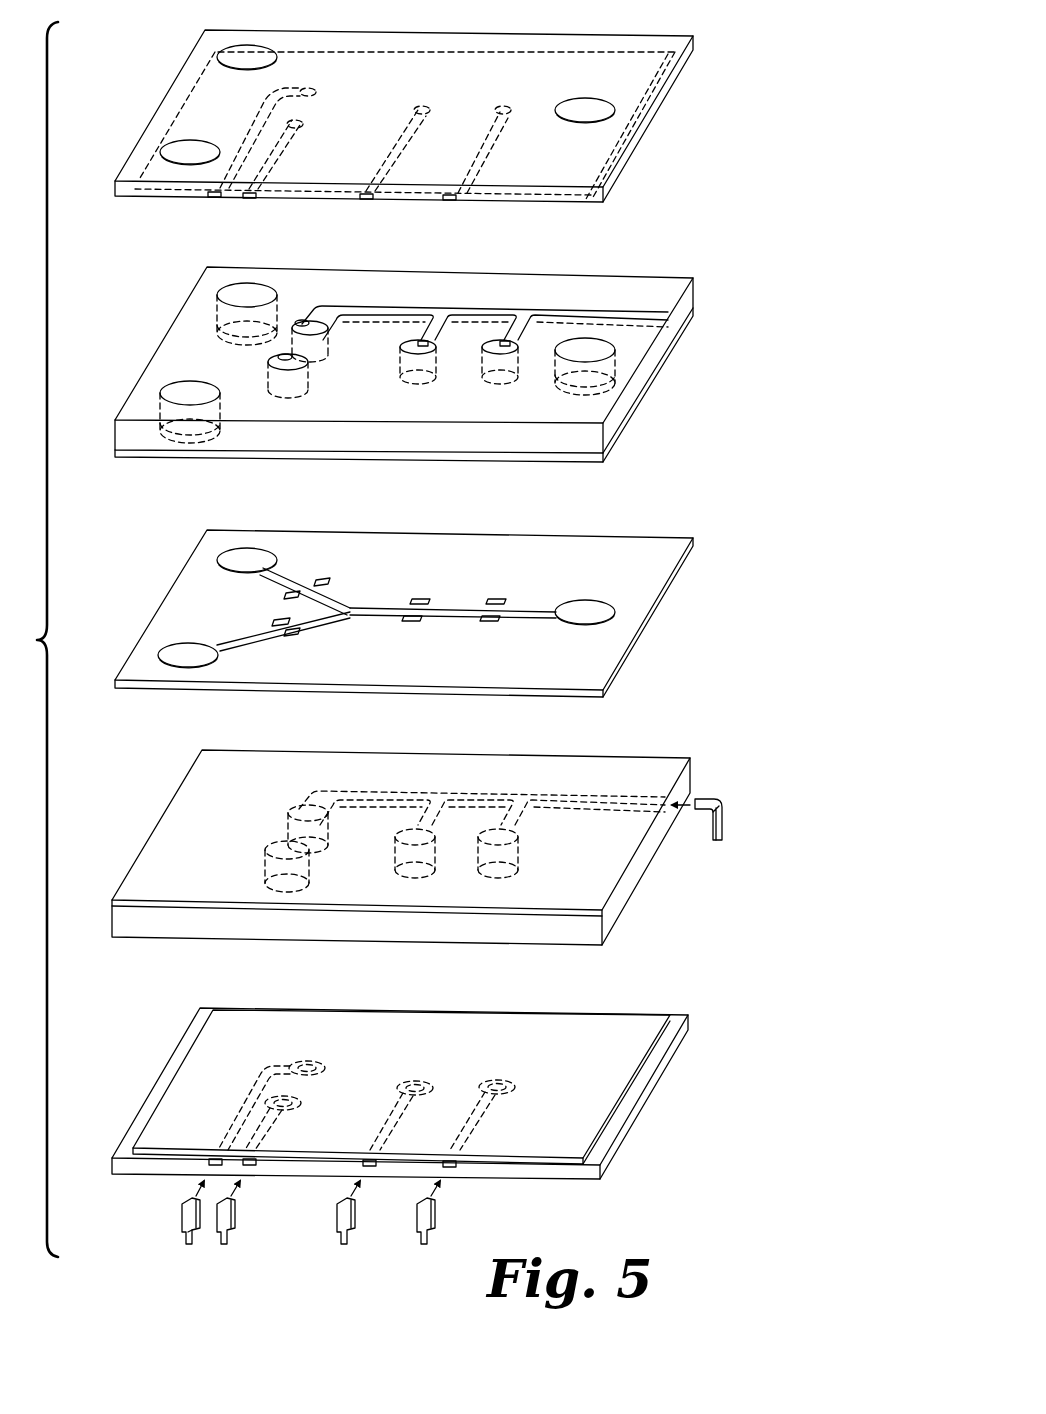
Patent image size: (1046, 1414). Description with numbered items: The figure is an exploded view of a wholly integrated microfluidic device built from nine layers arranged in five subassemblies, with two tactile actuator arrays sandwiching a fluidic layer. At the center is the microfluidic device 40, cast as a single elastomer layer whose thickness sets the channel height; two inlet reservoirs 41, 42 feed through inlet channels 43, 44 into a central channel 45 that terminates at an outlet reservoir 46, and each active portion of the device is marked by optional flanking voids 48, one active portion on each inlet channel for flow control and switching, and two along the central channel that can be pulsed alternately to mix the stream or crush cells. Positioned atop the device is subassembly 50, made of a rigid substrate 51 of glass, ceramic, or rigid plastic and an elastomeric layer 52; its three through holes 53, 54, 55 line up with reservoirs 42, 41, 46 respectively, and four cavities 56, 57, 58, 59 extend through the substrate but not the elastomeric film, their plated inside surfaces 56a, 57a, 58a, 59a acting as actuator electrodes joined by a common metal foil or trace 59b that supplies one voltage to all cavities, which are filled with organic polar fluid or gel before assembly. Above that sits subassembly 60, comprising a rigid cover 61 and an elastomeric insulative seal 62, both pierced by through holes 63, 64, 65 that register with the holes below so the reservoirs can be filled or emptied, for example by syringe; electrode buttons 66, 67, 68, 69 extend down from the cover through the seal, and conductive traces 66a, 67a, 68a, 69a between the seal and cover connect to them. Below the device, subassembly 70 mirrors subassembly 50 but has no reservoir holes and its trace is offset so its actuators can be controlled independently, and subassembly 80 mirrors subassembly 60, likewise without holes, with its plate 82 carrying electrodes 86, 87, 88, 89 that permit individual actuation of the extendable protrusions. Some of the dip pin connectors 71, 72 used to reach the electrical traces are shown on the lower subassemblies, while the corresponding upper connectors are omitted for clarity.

The microfluidic device 40 is at (741, 528).
The inlet reservoir 41 is at (180, 655).
The inlet reservoir 42 is at (237, 563).
The inlet channel 43 is at (291, 572).
The inlet channel 44 is at (245, 645).
The central channel 45 is at (372, 608).
The outlet reservoir 46 is at (595, 612).
The flanking voids 48 is at (292, 594).
The subassembly 50 is at (741, 275).
The rigid substrate 51 is at (618, 416).
The elastomeric layer 52 is at (582, 465).
The through hole 53 is at (233, 296).
The through hole 54 is at (178, 393).
The through hole 55 is at (598, 348).
The cavity 56 is at (326, 332).
The cavity 57 is at (300, 368).
The cavity 58 is at (415, 352).
The cavity 59 is at (498, 352).
The inside surface 56a is at (302, 322).
The inside surface 57a is at (278, 358).
The inside surface 58a is at (417, 344).
The inside surface 59a is at (500, 344).
The metal foil or trace 59b is at (630, 300).
The subassembly 60 is at (741, 27).
The rigid cover 61 is at (127, 184).
The elastomeric insulative seal 62 is at (200, 110).
The through hole 63 is at (237, 60).
The through hole 64 is at (180, 148).
The through hole 65 is at (605, 108).
The electrode button 66 is at (330, 90).
The electrode button 67 is at (305, 120).
The electrode button 68 is at (425, 100).
The electrode button 69 is at (503, 100).
The conductive trace 66a is at (214, 198).
The conductive trace 67a is at (250, 199).
The conductive trace 68a is at (367, 200).
The conductive trace 69a is at (450, 201).
The subassembly 70 is at (741, 757).
The dip pin connectors 71 is at (182, 1222).
The dip pin connector 72 is at (714, 828).
The subassembly 80 is at (741, 1020).
The bottom plate 82 is at (598, 1025).
The electrode 86 is at (310, 1060).
The electrode 87 is at (298, 1100).
The electrode 88 is at (415, 1080).
The electrode 89 is at (497, 1079).